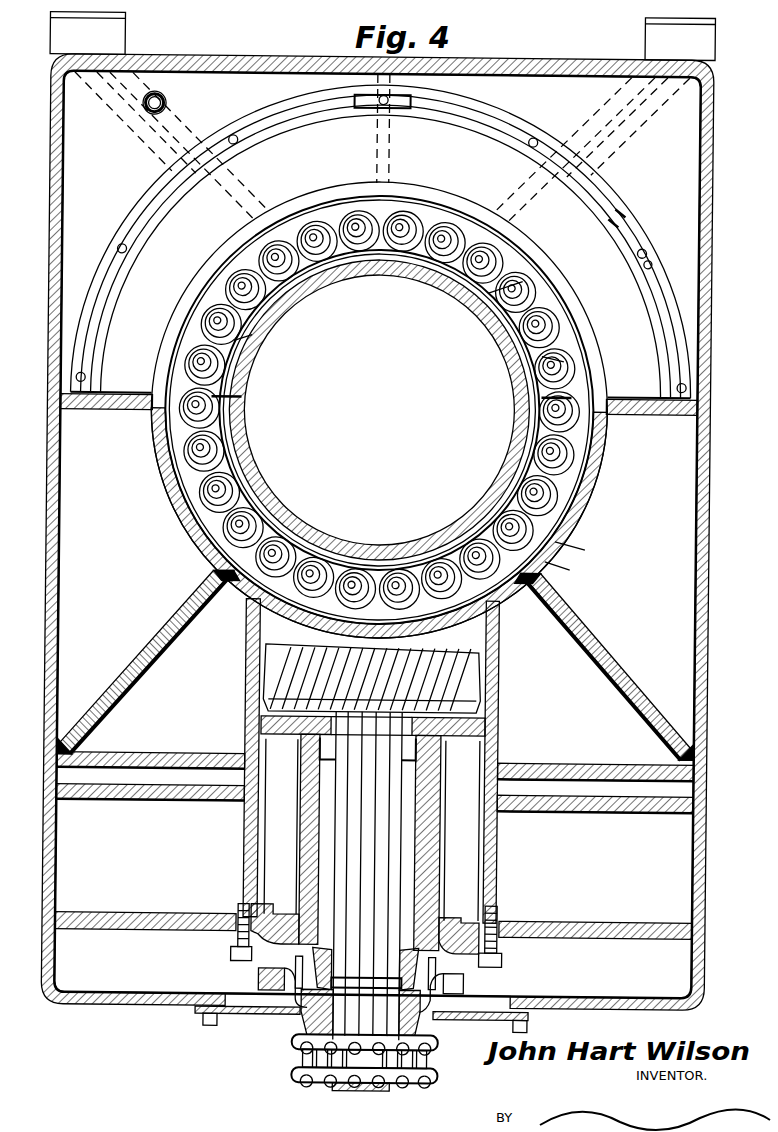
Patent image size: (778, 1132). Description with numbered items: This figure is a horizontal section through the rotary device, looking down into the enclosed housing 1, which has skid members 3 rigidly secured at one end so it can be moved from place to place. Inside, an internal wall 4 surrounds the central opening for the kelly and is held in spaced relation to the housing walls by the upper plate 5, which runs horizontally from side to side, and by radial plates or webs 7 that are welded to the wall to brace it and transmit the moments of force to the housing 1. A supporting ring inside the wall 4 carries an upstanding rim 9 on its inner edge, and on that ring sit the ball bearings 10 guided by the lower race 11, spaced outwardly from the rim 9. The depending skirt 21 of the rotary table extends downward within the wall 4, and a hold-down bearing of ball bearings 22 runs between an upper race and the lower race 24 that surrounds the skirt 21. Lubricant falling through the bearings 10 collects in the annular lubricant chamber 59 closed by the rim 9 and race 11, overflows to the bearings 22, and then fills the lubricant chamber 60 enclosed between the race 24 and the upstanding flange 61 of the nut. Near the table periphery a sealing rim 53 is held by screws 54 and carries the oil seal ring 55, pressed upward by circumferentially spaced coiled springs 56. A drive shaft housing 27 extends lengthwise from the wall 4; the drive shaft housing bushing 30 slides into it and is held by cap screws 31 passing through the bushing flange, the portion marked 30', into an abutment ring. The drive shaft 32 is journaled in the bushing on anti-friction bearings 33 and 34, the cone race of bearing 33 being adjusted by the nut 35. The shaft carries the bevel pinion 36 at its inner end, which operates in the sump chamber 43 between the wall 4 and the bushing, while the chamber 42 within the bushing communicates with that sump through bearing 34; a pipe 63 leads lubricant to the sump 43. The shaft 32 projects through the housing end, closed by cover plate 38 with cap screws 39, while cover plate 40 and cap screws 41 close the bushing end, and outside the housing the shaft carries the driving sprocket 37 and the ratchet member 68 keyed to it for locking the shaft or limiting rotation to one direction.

The housing 1 is at (50, 247).
The skid members 3 is at (48, 32).
The internal wall 4 is at (584, 496).
The upper plate 5 is at (274, 96).
The radial plates or webs 7 is at (60, 428).
The upstanding rim 9 is at (246, 338).
The ball bearings 10 is at (236, 376).
The lower race 11 is at (496, 290).
The depending skirt 21 is at (270, 300).
The ball bearings 22 is at (228, 450).
The lower race 24 is at (258, 502).
The drive shaft housing 27 is at (488, 716).
The drive shaft housing bushing 30 is at (372, 830).
The housing flange plate 30' is at (373, 930).
The cap screws 31 is at (236, 958).
The drive shaft 32 is at (364, 1092).
The anti-friction bearing 33 is at (424, 922).
The anti-friction bearing 34 is at (436, 764).
The nut 35 is at (436, 1012).
The bevel pinion 36 is at (482, 686).
The driving sprocket 37 is at (300, 1048).
The cover plate 38 is at (224, 1016).
The cap screws 39 is at (214, 1026).
The cover plate 40 is at (318, 1008).
The cap screws 41 is at (440, 1003).
The chamber 42 is at (424, 808).
The chamber 43 is at (496, 632).
The sealing rim 53 is at (625, 226).
The screws 54 is at (650, 262).
The oil seal ring 55 is at (508, 142).
The coiled springs 56 is at (398, 108).
The annular lubricant chamber 59 is at (566, 356).
The lubricant chamber 60 is at (584, 528).
The upstanding flange 61 is at (562, 552).
The pipe 63 is at (160, 108).
The ratchet member 68 is at (262, 980).